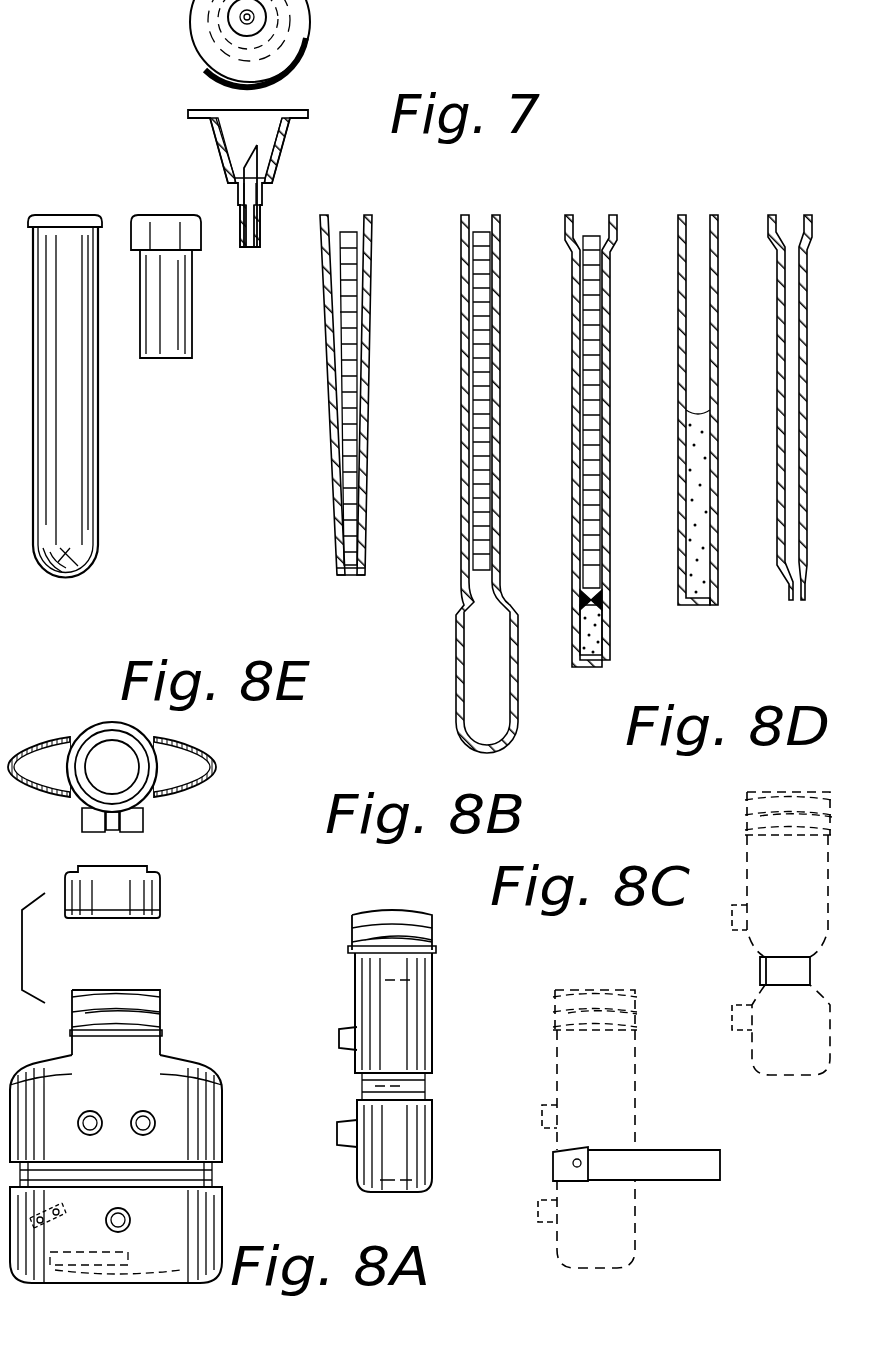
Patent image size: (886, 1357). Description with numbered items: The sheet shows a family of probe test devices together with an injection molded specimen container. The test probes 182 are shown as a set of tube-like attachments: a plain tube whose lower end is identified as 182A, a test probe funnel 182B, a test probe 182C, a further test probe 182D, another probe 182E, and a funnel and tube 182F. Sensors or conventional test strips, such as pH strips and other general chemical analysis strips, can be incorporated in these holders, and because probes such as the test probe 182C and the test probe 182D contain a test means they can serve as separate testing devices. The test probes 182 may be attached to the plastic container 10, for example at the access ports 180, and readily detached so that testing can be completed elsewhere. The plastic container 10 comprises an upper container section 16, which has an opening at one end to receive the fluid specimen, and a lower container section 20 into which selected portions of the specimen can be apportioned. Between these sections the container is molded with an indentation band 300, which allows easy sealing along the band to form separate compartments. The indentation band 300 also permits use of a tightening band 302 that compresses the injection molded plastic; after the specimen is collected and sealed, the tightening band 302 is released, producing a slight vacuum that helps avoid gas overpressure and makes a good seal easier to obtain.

In FIG. 7, the test probe 182 is at (103, 468).
In FIG. 7, the tube bottom 182A is at (85, 570).
In FIG. 7, the test probe funnel 182B is at (336, 488).
In FIG. 7, the test probe 182C is at (458, 620).
In FIG. 7, the test probe 182D is at (578, 582).
In FIG. 7, the tube with liquid 182E is at (680, 367).
In FIG. 7, the funnel and tube 182F is at (778, 345).
In FIG. 8A, the plastic container 10 is at (176, 1050).
In FIG. 8B, the plastic container 10 is at (383, 903).
In FIG. 8C, the plastic container 10 is at (589, 973).
In FIG. 8D, the plastic container 10 is at (738, 857).
In FIG. 8A, the upper container section 16 is at (60, 1082).
In FIG. 8B, the upper container section 16 is at (413, 1043).
In FIG. 8C, the upper container section 16 is at (622, 1120).
In FIG. 8D, the upper container section 16 is at (760, 940).
In FIG. 8A, the lower container section 20 is at (200, 1220).
In FIG. 8B, the lower container section 20 is at (413, 1160).
In FIG. 8C, the lower container section 20 is at (612, 1226).
In FIG. 8D, the lower container section 20 is at (760, 1045).
In FIG. 8A, the access port 180 is at (143, 1112).
In FIG. 8B, the access port 180 is at (345, 1140).
In FIG. 8C, the access port 180 is at (545, 1108).
In FIG. 8A, the indentation band 300 is at (195, 1172).
In FIG. 8B, the indentation band 300 is at (410, 1090).
In FIG. 8C, the tightening band 302 is at (677, 1172).
In FIG. 8D, the tightening band 302 is at (760, 972).